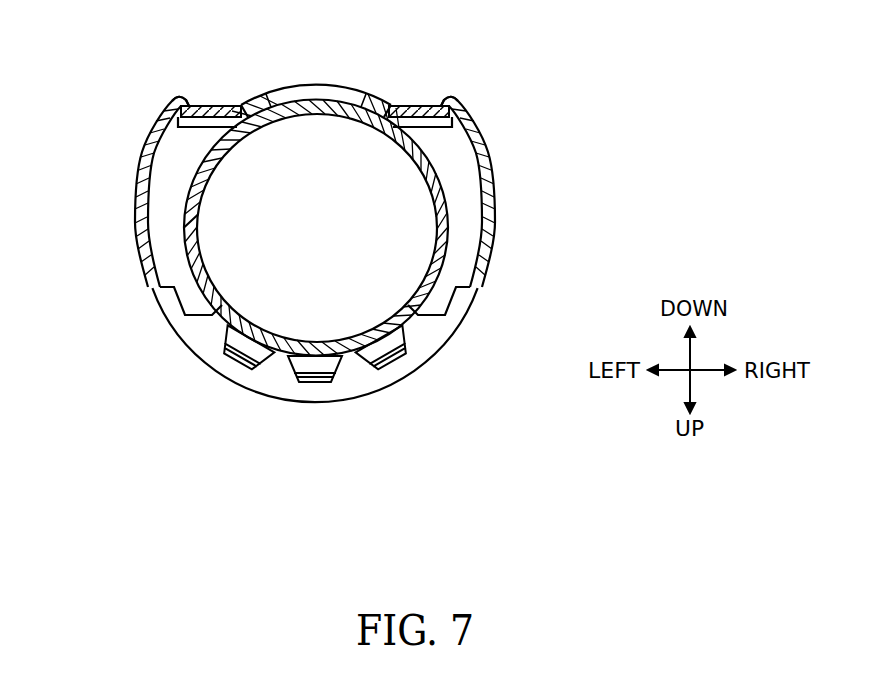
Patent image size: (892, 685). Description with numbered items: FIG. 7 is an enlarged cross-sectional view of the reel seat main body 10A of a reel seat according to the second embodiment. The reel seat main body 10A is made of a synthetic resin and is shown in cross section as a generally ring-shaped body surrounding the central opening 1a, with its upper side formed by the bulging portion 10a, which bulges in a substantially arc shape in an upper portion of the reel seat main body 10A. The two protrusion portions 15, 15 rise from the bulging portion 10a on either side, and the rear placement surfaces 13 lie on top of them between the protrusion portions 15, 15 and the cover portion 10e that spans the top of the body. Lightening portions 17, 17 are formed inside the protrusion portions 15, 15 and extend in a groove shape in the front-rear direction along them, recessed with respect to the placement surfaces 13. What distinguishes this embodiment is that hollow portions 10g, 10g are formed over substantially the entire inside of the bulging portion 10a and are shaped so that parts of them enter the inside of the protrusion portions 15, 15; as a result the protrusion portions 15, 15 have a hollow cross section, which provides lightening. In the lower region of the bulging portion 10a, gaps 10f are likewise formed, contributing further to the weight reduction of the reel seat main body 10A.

The tube 1a is at (234, 264).
The reel seat main body 10A is at (550, 107).
The bulging portion 10a is at (202, 337).
The cover portion 10e is at (272, 87).
The gaps 10f is at (383, 350).
The hollow portions 10g is at (178, 162).
The rear placement surfaces 13 is at (210, 106).
The protrusion portions 15 is at (175, 98).
The lightening portions 17 is at (197, 92).